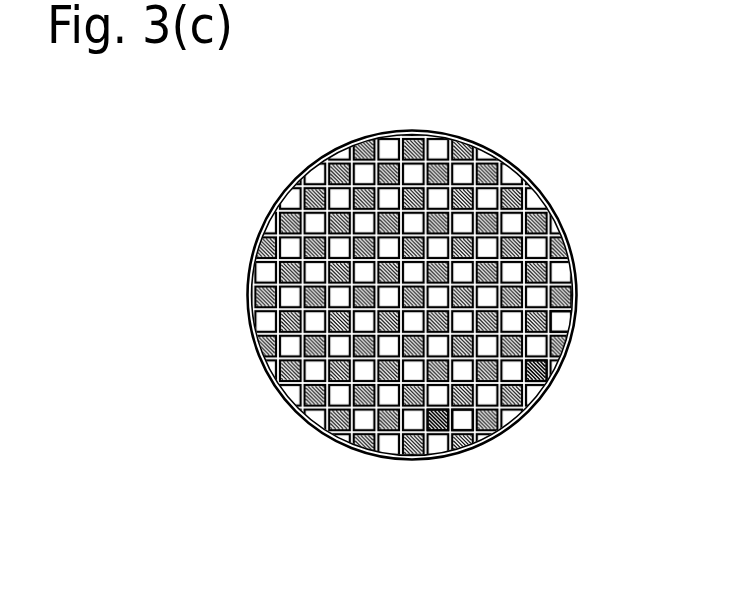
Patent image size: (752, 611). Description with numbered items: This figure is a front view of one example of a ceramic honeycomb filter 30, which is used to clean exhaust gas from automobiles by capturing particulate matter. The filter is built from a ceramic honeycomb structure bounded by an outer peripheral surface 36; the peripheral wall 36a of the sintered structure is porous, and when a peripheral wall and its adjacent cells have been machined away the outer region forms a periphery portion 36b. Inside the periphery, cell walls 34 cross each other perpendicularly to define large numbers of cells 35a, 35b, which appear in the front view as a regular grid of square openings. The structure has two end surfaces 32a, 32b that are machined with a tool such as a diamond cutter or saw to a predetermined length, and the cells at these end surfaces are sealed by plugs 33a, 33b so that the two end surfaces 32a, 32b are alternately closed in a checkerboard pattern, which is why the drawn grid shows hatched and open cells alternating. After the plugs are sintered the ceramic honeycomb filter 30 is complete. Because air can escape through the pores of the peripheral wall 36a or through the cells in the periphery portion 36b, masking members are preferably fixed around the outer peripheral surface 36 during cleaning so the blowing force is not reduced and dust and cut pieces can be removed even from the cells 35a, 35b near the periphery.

The ceramic honeycomb filter 30 is at (286, 164).
The end surface 32a is at (532, 387).
The end surface 32b is at (549, 421).
The plug 33a is at (556, 322).
The plug 33b is at (598, 336).
The cell wall 34 is at (365, 408).
The cell 35a is at (437, 423).
The cell 35b is at (460, 423).
The outer peripheral surface 36 is at (286, 406).
The peripheral wall 36a is at (412, 324).
The periphery portion 36b is at (412, 324).